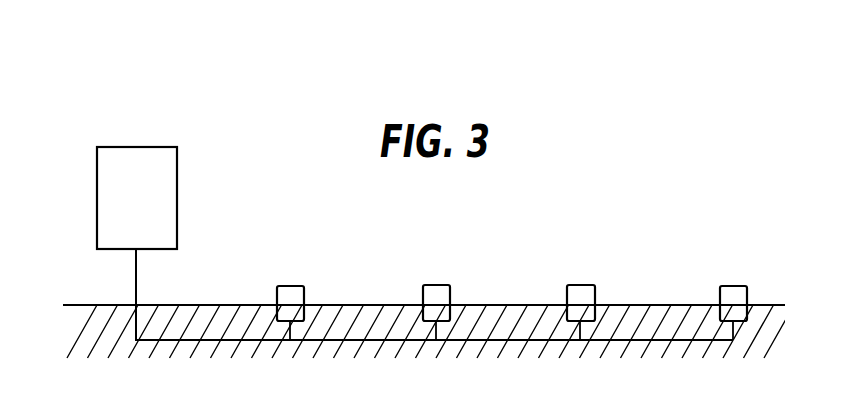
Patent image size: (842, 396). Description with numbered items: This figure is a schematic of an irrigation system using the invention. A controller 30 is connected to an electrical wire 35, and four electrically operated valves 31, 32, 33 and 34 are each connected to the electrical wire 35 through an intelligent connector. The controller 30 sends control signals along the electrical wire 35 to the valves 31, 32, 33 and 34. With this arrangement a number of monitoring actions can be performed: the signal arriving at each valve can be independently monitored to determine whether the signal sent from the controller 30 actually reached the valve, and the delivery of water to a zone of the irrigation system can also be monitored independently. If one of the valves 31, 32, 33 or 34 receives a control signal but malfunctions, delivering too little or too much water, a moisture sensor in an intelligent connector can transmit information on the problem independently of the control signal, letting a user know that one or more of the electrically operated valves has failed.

The controller 30 is at (162, 178).
The electrically operated valve 31 is at (291, 292).
The electrically operated valve 32 is at (436, 292).
The electrically operated valve 33 is at (578, 292).
The electrically operated valve 34 is at (733, 292).
The electrical wire 35 is at (137, 285).